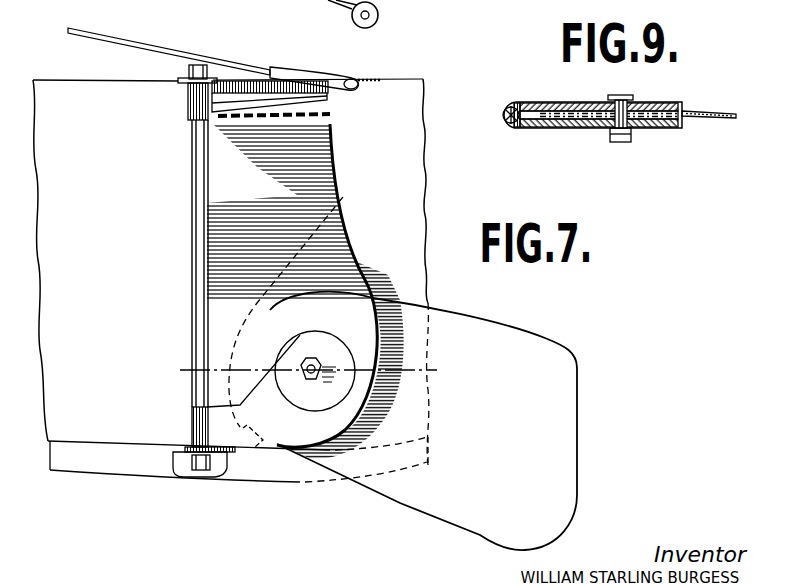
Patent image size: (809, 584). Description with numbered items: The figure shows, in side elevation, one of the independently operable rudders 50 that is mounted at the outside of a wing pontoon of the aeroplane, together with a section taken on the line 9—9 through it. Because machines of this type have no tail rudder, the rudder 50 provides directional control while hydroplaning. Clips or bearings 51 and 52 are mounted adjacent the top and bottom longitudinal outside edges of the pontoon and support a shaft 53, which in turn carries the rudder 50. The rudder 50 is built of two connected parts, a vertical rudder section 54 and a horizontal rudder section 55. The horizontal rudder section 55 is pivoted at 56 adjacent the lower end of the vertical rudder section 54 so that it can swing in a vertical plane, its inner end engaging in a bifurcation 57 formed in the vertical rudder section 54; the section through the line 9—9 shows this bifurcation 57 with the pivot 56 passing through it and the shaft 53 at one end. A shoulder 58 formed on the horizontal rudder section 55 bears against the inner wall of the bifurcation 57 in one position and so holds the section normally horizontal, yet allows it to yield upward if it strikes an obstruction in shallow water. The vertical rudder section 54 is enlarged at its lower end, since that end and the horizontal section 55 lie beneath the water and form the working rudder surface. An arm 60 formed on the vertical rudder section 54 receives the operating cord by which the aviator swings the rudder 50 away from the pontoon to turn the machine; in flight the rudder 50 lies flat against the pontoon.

In FIG. 7, the section line 9— 9 is at (308, 372).
In FIG. 7, the rudder 50 is at (343, 168).
In FIG. 7, the clip or bearing 51 is at (182, 78).
In FIG. 7, the clip or bearing 52 is at (183, 463).
In FIG. 7, the shaft 53 is at (192, 197).
In FIG. 9, the shaft 53 is at (500, 128).
In FIG. 7, the vertical rudder section 54 is at (330, 195).
In FIG. 9, the vertical rudder section 54 is at (572, 123).
In FIG. 7, the horizontal rudder section 55 is at (488, 330).
In FIG. 9, the horizontal rudder section 55 is at (713, 123).
In FIG. 7, the pivot 56 is at (311, 358).
In FIG. 9, the pivot 56 is at (622, 142).
In FIG. 7, the bifurcation 57 is at (320, 223).
In FIG. 9, the bifurcation 57 is at (665, 102).
In FIG. 7, the shoulder 58 is at (247, 440).
In FIG. 9, the shoulder 58 is at (537, 130).
In FIG. 7, the arm 60 is at (257, 85).